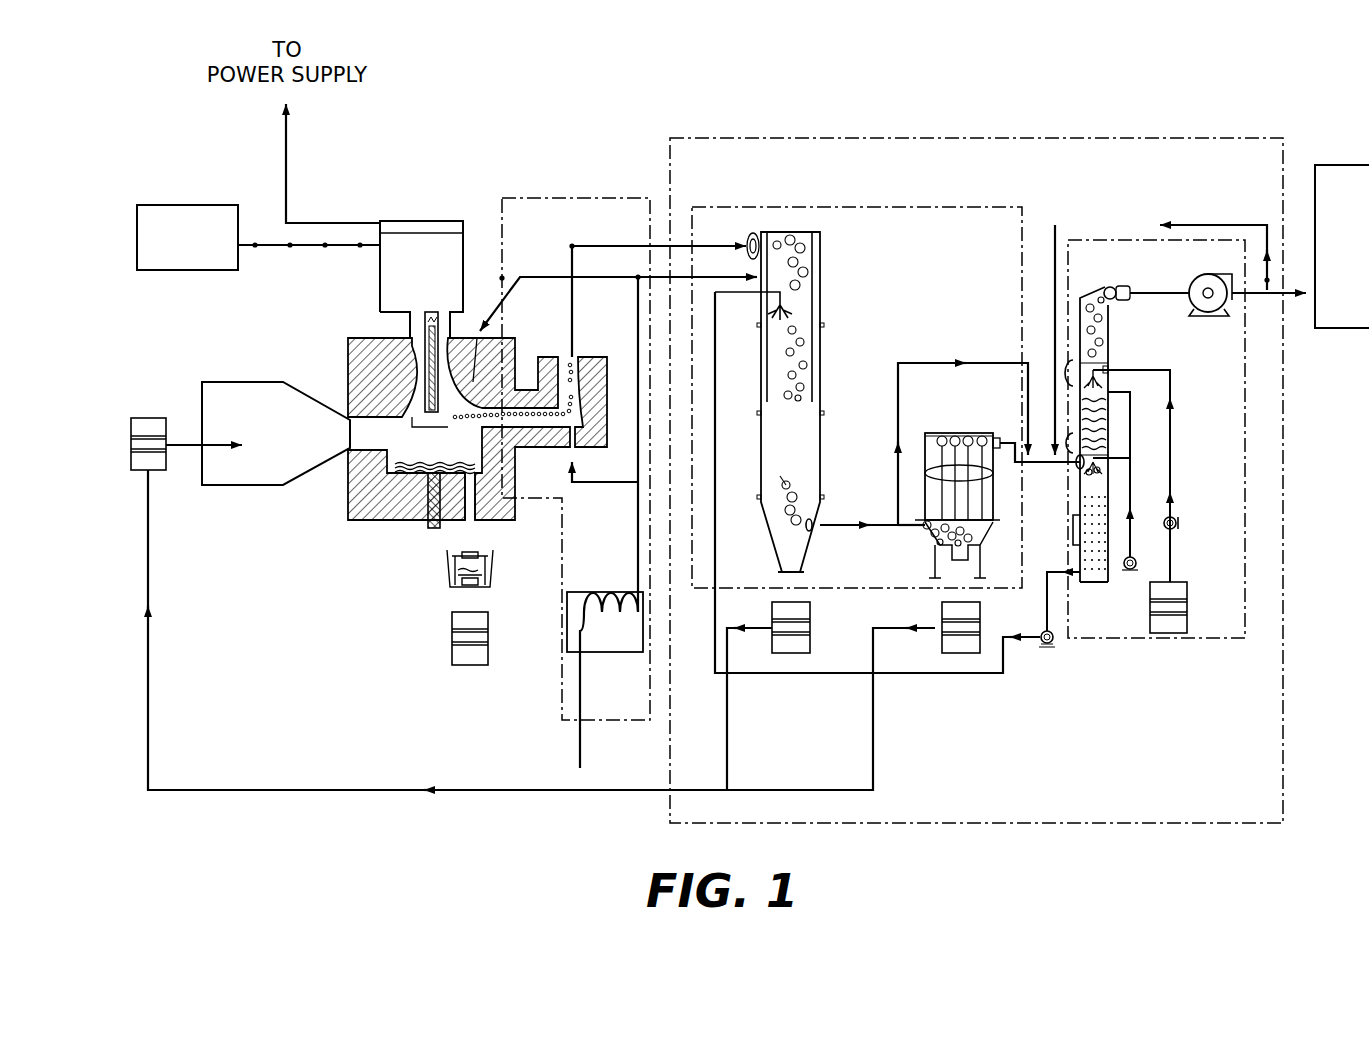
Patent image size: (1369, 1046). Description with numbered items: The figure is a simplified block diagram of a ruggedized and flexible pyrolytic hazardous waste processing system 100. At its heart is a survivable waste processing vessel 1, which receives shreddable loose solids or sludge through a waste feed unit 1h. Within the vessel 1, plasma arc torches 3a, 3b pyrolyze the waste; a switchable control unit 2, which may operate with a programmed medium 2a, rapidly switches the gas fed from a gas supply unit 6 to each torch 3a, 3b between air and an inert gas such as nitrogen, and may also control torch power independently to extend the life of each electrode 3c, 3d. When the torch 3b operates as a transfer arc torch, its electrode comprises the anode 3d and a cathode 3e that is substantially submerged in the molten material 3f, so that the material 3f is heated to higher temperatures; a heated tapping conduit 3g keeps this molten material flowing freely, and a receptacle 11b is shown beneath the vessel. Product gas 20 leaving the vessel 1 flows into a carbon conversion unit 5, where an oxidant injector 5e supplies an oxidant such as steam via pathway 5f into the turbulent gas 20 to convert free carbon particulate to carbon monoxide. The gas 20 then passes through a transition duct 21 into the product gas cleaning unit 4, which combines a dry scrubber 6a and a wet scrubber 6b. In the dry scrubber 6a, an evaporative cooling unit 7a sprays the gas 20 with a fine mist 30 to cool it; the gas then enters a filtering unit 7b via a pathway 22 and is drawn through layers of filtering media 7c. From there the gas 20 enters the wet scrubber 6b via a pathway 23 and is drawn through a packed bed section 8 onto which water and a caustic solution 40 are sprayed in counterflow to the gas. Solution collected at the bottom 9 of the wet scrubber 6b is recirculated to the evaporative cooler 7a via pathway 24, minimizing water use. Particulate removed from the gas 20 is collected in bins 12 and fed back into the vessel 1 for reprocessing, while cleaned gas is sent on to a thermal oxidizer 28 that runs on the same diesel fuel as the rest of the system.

The waste processing vessel 1 is at (398, 413).
The waste feed unit 1h is at (248, 488).
The switchable control unit 2 is at (383, 221).
The programmed medium 2a is at (405, 233).
The plasma arc torch 3a is at (430, 320).
The plasma arc torch 3b is at (433, 322).
The electrode 3c is at (425, 343).
The electrode 3d is at (478, 240).
The cathode 3e is at (432, 527).
The molten material 3f is at (393, 474).
The heated tapping conduit 3g is at (472, 522).
The product gas cleaning unit 4 is at (725, 145).
The carbon conversion unit 5 is at (543, 198).
The oxidant injector 5e is at (565, 627).
The oxidant pathway 5f is at (575, 447).
The gas supply unit 6 is at (207, 204).
The dry scrubber 6a is at (847, 217).
The wet scrubber 6b is at (1136, 640).
The evaporative cooling unit 7a is at (822, 430).
The filtering unit 7b is at (898, 490).
The filtering media 7c is at (898, 460).
The packed bed section 8 is at (1100, 428).
The bottom of wet scrubber 9 is at (1100, 582).
The slag receptacle 11b is at (445, 583).
The bin 12 is at (150, 418).
The product gas 20 is at (805, 390).
The transition duct 21 is at (580, 232).
The pathway 22 is at (910, 526).
The pathway 23 is at (1067, 465).
The pathway 24 is at (935, 677).
The thermal oxidizer 28 is at (1350, 330).
The fine mist 30 is at (793, 310).
The caustic solution 40 is at (1100, 380).
The pyrolytic system 100 is at (1015, 823).